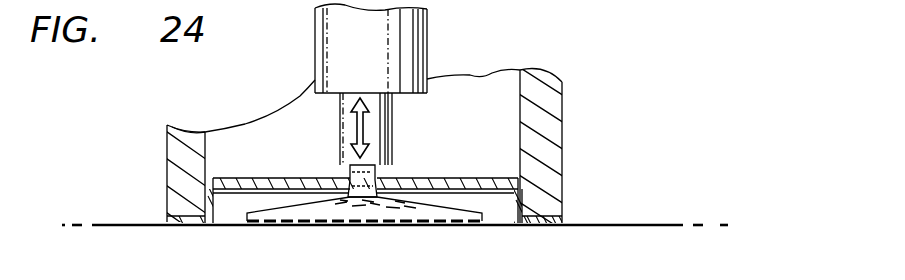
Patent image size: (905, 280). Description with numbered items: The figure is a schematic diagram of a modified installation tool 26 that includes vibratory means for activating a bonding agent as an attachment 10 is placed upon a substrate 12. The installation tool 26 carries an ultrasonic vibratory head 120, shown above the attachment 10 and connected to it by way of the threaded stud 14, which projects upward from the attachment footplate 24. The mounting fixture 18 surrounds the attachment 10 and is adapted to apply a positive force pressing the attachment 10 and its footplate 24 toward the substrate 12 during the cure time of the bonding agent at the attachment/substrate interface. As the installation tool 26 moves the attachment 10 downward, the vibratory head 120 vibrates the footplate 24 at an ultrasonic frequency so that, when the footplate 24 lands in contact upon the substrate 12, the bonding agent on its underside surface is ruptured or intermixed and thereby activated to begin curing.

The attachment 10 is at (392, 172).
The substrate 12 is at (652, 226).
The threaded stud 14 is at (348, 167).
The mounting fixture 18 is at (288, 172).
The attachment footplate 24 is at (297, 212).
The installation tool 26 is at (576, 88).
The ultrasonic vibratory head 120 is at (415, 52).